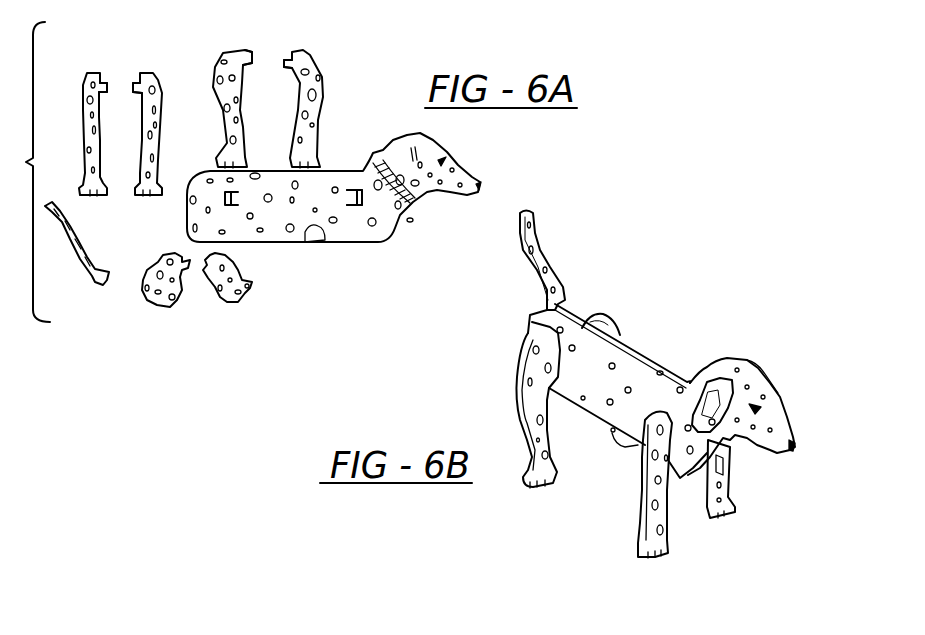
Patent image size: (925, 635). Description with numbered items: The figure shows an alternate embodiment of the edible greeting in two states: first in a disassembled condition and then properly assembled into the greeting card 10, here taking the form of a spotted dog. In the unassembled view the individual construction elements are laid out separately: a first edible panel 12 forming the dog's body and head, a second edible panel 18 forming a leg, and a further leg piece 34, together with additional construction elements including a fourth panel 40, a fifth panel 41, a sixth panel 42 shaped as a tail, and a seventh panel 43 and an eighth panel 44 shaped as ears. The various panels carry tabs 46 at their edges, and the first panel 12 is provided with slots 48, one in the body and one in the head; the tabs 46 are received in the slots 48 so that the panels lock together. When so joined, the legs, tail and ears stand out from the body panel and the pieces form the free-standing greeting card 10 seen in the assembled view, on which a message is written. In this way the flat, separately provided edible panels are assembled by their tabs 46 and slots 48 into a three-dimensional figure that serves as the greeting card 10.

In FIG. 6B, the greeting card 10 is at (639, 333).
In FIG. 6A, the first edible panel 12 is at (357, 223).
In FIG. 6A, the second edible panel 18 is at (308, 70).
In FIG. 6A, the front leg 34 is at (227, 57).
In FIG. 6A, the fourth panel 40 is at (160, 78).
In FIG. 6A, the fifth panel 41 is at (86, 90).
In FIG. 6A, the sixth panel 42 is at (93, 220).
In FIG. 6A, the seventh panel 43 is at (248, 297).
In FIG. 6A, the eighth panel 44 is at (167, 300).
In FIG. 6A, the tabs 46 is at (133, 80).
In FIG. 6A, the slots 48 is at (360, 187).